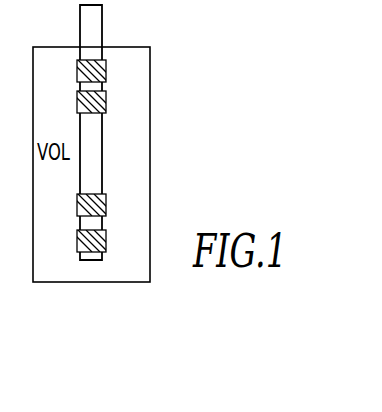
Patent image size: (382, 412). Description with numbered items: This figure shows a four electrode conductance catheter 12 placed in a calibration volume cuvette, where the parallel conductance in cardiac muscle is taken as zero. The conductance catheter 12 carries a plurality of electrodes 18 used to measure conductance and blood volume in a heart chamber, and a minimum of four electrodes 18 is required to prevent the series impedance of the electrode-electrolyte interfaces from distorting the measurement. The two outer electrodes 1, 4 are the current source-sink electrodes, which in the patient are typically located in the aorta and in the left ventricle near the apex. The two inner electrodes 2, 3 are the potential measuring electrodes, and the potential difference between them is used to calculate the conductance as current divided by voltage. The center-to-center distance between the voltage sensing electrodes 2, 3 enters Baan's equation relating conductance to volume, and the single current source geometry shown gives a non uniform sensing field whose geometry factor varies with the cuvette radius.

The conductance catheter 12 is at (113, 153).
The electrodes 18 is at (106, 91).
The current source-sink electrode 1 is at (55, 67).
The potential measuring electrode 2 is at (125, 105).
The potential measuring electrode 3 is at (125, 202).
The current source-sink electrode 4 is at (62, 242).